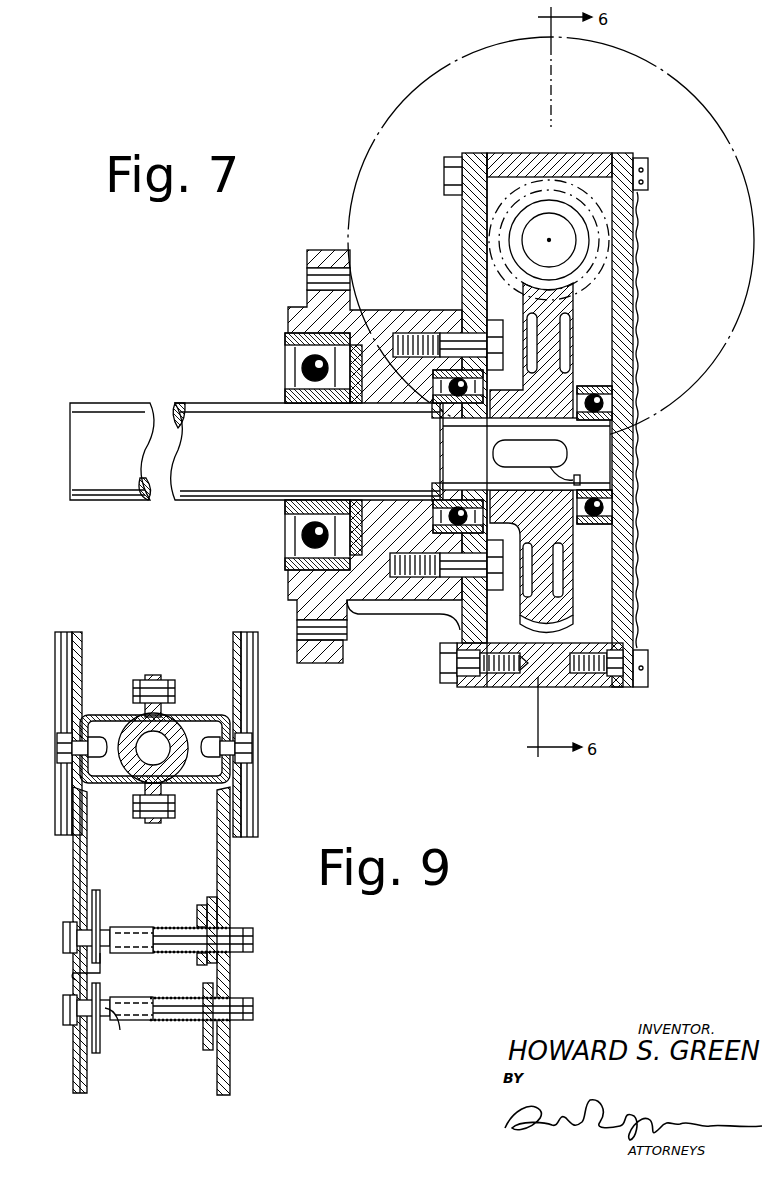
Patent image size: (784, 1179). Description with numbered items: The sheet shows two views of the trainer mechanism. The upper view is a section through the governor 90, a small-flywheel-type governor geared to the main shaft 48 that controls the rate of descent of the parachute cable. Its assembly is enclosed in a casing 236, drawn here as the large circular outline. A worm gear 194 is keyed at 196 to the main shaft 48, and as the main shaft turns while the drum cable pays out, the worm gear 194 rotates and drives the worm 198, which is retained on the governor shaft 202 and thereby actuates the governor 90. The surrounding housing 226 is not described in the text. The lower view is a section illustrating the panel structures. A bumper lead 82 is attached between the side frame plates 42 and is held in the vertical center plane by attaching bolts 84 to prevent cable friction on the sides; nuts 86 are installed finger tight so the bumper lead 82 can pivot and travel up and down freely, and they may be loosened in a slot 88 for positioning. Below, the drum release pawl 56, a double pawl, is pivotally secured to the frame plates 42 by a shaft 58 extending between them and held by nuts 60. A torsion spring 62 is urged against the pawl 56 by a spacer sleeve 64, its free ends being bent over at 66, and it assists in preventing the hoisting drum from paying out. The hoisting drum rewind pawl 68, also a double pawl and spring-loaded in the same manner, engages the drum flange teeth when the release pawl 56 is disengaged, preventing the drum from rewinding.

In FIG. 7, the governor 90 is at (521, 362).
In FIG. 7, the casing 236 is at (458, 72).
In FIG. 7, the housing 226 is at (627, 157).
In FIG. 7, the governor shaft 202 is at (553, 223).
In FIG. 7, the worm 198 is at (597, 240).
In FIG. 7, the key 196 is at (573, 480).
In FIG. 7, the worm gear 194 is at (557, 627).
In FIG. 7, the main shaft 48 is at (232, 432).
In FIG. 9, the slot 88 is at (77, 675).
In FIG. 9, the attaching bolts 84 is at (158, 677).
In FIG. 9, the bumper lead 82 is at (156, 744).
In FIG. 9, the nuts 86 is at (57, 753).
In FIG. 9, the frame plates 42 is at (230, 855).
In FIG. 9, the drum release pawl 56 is at (100, 898).
In FIG. 9, the torsion spring 62 is at (200, 925).
In FIG. 9, the spacer sleeve 64 is at (137, 928).
In FIG. 9, the shaft 58 is at (172, 936).
In FIG. 9, the nuts 60 is at (242, 930).
In FIG. 9, the bent-over free ends 66 is at (72, 975).
In FIG. 9, the hoisting drum rewind pawl 68 is at (95, 1055).